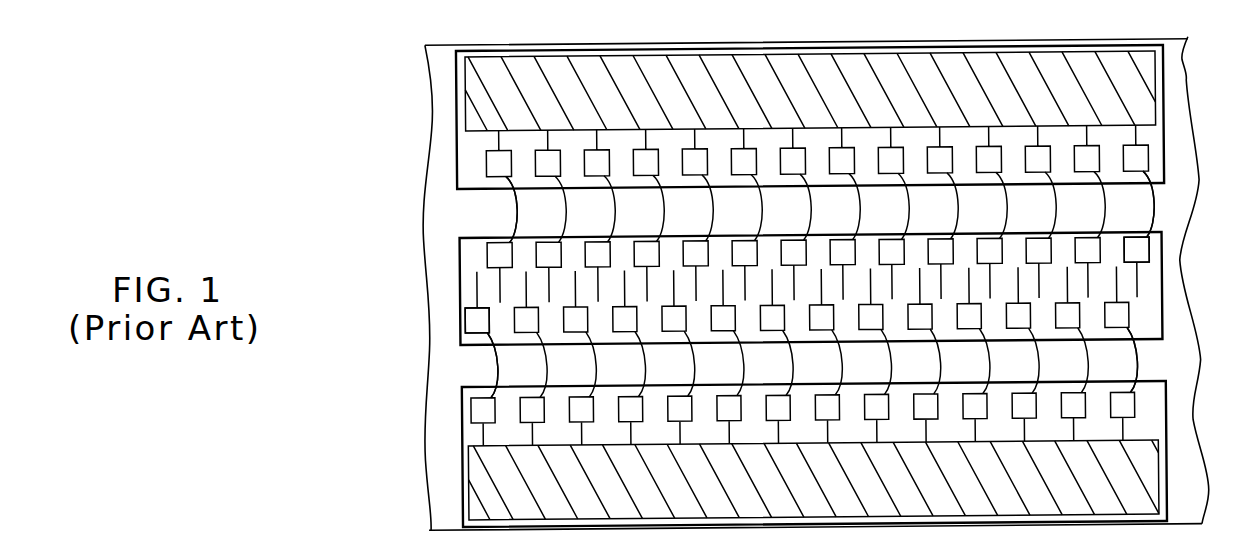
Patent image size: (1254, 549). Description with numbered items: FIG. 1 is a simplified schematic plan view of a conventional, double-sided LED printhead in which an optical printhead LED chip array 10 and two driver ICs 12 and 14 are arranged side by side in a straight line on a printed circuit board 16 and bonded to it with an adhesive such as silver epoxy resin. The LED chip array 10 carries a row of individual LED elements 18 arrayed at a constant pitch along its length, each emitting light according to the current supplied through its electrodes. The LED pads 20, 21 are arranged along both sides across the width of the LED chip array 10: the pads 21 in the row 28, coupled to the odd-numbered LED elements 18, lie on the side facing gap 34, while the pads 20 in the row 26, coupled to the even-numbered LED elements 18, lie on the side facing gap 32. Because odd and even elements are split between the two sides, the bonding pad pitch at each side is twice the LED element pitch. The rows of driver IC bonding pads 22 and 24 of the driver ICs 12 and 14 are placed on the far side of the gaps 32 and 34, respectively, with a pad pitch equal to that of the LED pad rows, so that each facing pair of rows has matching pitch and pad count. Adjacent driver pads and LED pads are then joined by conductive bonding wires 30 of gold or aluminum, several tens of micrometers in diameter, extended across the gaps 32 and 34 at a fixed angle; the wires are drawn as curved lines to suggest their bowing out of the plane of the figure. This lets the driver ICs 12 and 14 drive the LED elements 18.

The LED chip array 10 is at (1163, 313).
The driver IC 12 is at (1150, 69).
The driver IC 14 is at (1148, 467).
The printed circuit board 16 is at (1193, 508).
The LED elements 18 is at (1138, 283).
The LED pad 20 is at (1148, 252).
The LED pad 21 is at (462, 338).
The driver IC bonding pads 22 is at (1168, 163).
The driver IC bonding pads 24 is at (1168, 406).
The pad array 26 is at (453, 263).
The pad array 28 is at (453, 315).
The bonding wires 30 is at (1157, 207).
The gap 32 is at (478, 216).
The gap 34 is at (466, 369).